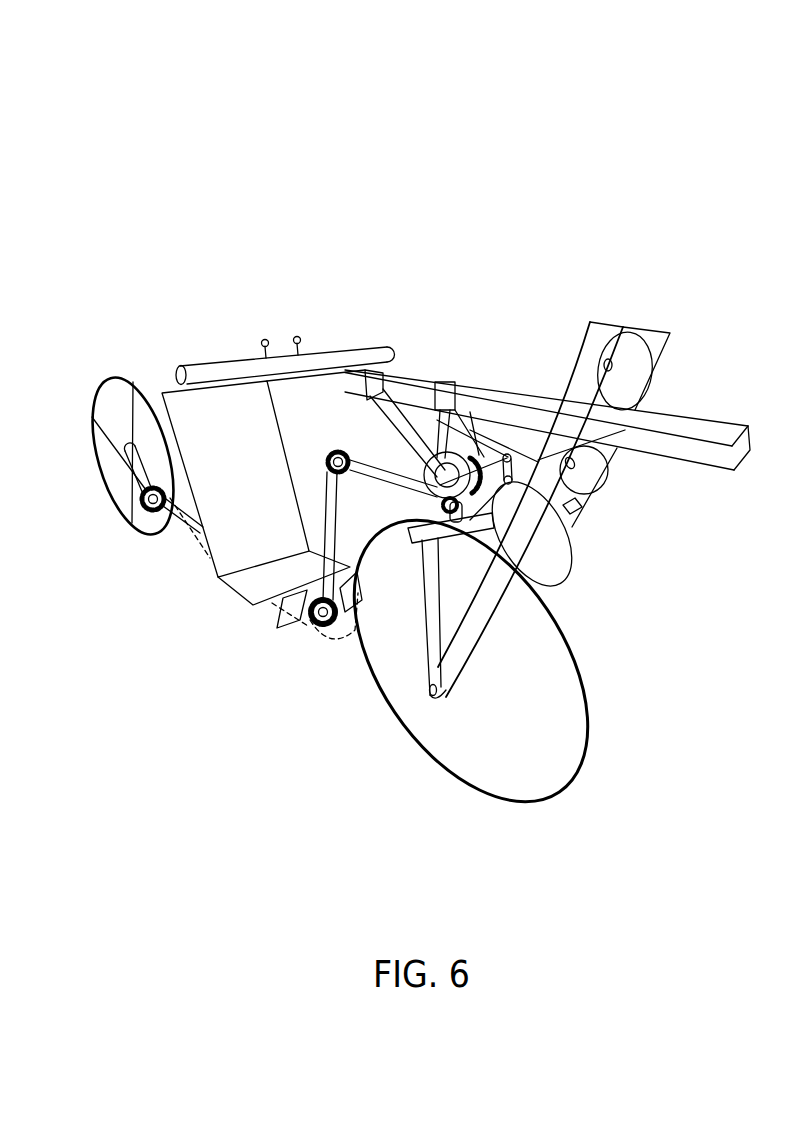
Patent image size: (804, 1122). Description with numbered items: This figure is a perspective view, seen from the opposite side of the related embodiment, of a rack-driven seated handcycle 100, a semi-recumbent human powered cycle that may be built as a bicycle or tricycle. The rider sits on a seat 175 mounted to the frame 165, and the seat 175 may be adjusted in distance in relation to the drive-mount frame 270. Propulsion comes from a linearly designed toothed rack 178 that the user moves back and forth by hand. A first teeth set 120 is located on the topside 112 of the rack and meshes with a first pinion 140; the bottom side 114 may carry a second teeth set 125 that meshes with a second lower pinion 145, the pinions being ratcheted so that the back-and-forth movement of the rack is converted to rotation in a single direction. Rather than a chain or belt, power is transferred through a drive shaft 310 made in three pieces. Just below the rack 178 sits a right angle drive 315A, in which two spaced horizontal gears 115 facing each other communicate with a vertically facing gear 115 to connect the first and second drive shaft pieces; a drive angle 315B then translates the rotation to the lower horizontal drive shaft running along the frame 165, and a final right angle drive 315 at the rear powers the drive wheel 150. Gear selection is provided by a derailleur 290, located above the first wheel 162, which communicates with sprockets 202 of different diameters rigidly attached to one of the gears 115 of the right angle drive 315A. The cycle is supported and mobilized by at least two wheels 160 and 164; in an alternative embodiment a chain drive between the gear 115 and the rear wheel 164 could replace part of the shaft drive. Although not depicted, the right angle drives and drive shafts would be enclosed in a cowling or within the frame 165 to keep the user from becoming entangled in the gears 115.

The rack-driven seated handcycle 100 is at (618, 126).
The topside 112 is at (503, 388).
The bottom side 114 is at (681, 461).
The gear 115 is at (347, 451).
The first teeth set 120 is at (676, 416).
The second teeth set 125 is at (639, 451).
The first pinion 140 is at (631, 361).
The second lower pinion 145 is at (594, 477).
The drive wheel 150 is at (122, 378).
The wheel 160 is at (589, 712).
The first wheel 162 is at (584, 662).
The rear wheel 164 is at (98, 384).
The frame 165 is at (325, 640).
The seat 175 is at (246, 446).
The rack 178 is at (713, 419).
The sprocket 202 is at (435, 487).
The drive-mount frame 270 is at (594, 343).
The derailleur 290 is at (462, 425).
The drive shaft 310 is at (334, 533).
The right angle drive 315 is at (134, 530).
The right angle drive 315A is at (322, 468).
The drive angle 315B is at (308, 632).